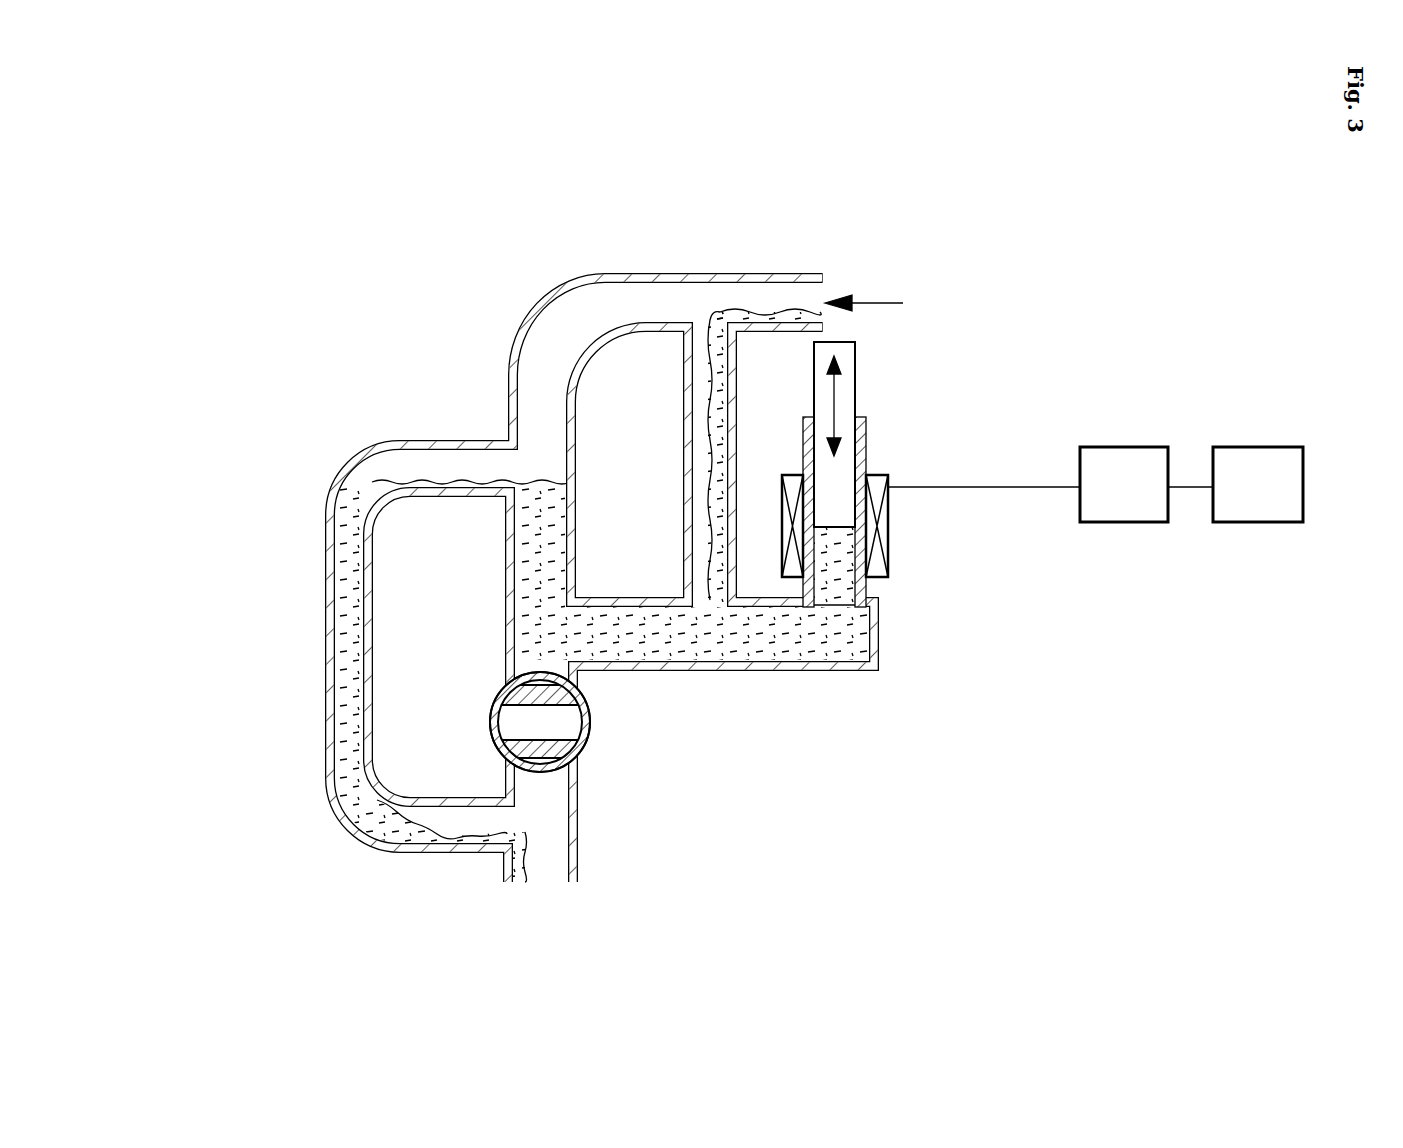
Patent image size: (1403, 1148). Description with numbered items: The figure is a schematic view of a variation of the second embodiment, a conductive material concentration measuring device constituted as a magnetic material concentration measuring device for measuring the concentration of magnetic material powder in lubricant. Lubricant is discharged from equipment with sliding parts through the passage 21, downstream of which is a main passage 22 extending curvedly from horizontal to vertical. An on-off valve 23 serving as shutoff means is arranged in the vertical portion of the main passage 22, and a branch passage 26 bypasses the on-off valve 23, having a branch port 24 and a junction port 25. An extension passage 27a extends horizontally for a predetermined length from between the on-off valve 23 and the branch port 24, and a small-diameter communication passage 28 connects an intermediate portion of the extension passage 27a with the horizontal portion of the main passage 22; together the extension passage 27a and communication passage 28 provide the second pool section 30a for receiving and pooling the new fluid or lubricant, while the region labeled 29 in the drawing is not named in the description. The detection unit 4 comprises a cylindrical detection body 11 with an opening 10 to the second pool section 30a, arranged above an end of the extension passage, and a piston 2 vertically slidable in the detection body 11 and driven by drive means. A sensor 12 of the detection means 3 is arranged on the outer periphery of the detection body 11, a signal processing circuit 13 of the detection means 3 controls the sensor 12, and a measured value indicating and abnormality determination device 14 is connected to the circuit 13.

The piston 2 is at (872, 345).
The detection means 3 is at (993, 460).
The detection unit 4 is at (880, 450).
The opening 10 is at (845, 608).
The cylindrical detection body 11 is at (868, 430).
The sensor 12 is at (890, 545).
The signal processing circuit 13 is at (1125, 525).
The measured value indicating and abnormality determination device 14 is at (1250, 525).
The passage 21 is at (520, 304).
The main passage 22 is at (508, 376).
The on-off valve 23 is at (583, 748).
The branch port 24 is at (500, 460).
The junction port 25 is at (511, 822).
The branch passage 26 is at (328, 622).
The extension passage 27a is at (640, 675).
The small-diameter communication passage 28 is at (690, 448).
The fluid chamber 29 is at (553, 565).
The second pool section 30a is at (775, 637).